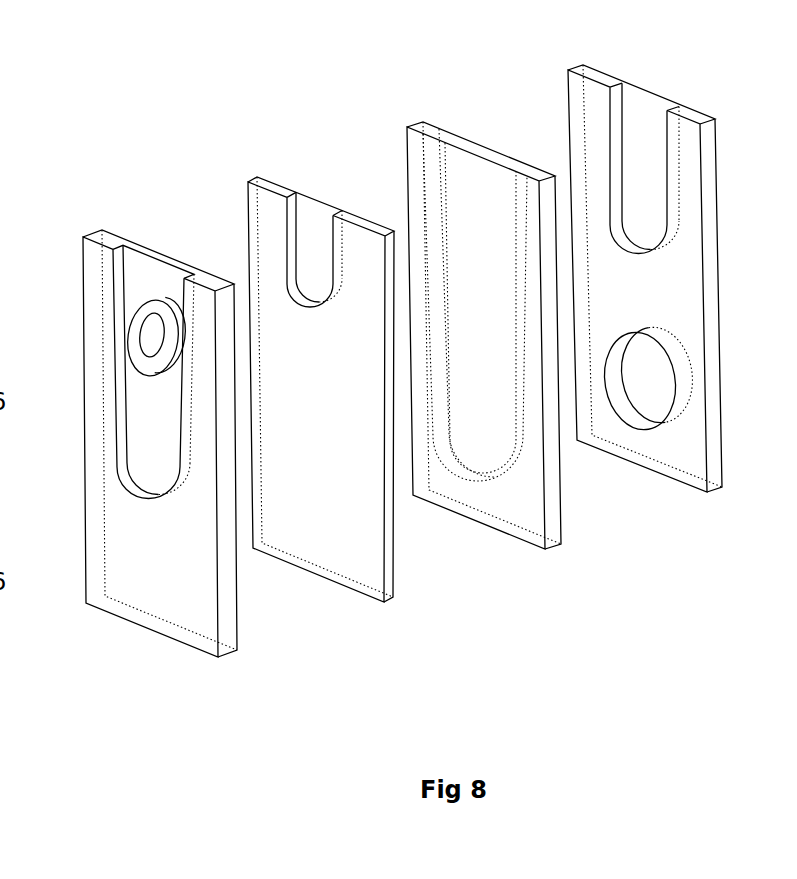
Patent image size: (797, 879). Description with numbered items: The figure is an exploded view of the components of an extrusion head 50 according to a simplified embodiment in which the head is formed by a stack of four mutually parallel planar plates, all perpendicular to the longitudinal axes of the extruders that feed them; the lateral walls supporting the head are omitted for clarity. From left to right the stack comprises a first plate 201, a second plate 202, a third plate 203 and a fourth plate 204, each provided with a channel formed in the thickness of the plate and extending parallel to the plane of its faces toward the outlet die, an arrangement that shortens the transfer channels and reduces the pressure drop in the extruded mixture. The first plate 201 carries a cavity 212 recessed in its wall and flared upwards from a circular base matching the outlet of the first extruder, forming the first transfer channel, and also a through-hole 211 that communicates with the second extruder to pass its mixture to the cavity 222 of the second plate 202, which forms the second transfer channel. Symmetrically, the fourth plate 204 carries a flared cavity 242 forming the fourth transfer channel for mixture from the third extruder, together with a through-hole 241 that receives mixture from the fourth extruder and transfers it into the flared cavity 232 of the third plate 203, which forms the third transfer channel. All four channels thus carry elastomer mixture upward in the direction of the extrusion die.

The extrusion head 50 is at (340, 122).
The first plate 201 is at (177, 627).
The second plate 202 is at (350, 583).
The third plate 203 is at (483, 505).
The fourth plate 204 is at (648, 460).
The through-hole 211 is at (133, 318).
The cavity 212 is at (140, 285).
The cavity 222 is at (307, 233).
The cavity 232 is at (463, 177).
The through-hole 241 is at (657, 387).
The cavity 242 is at (633, 130).